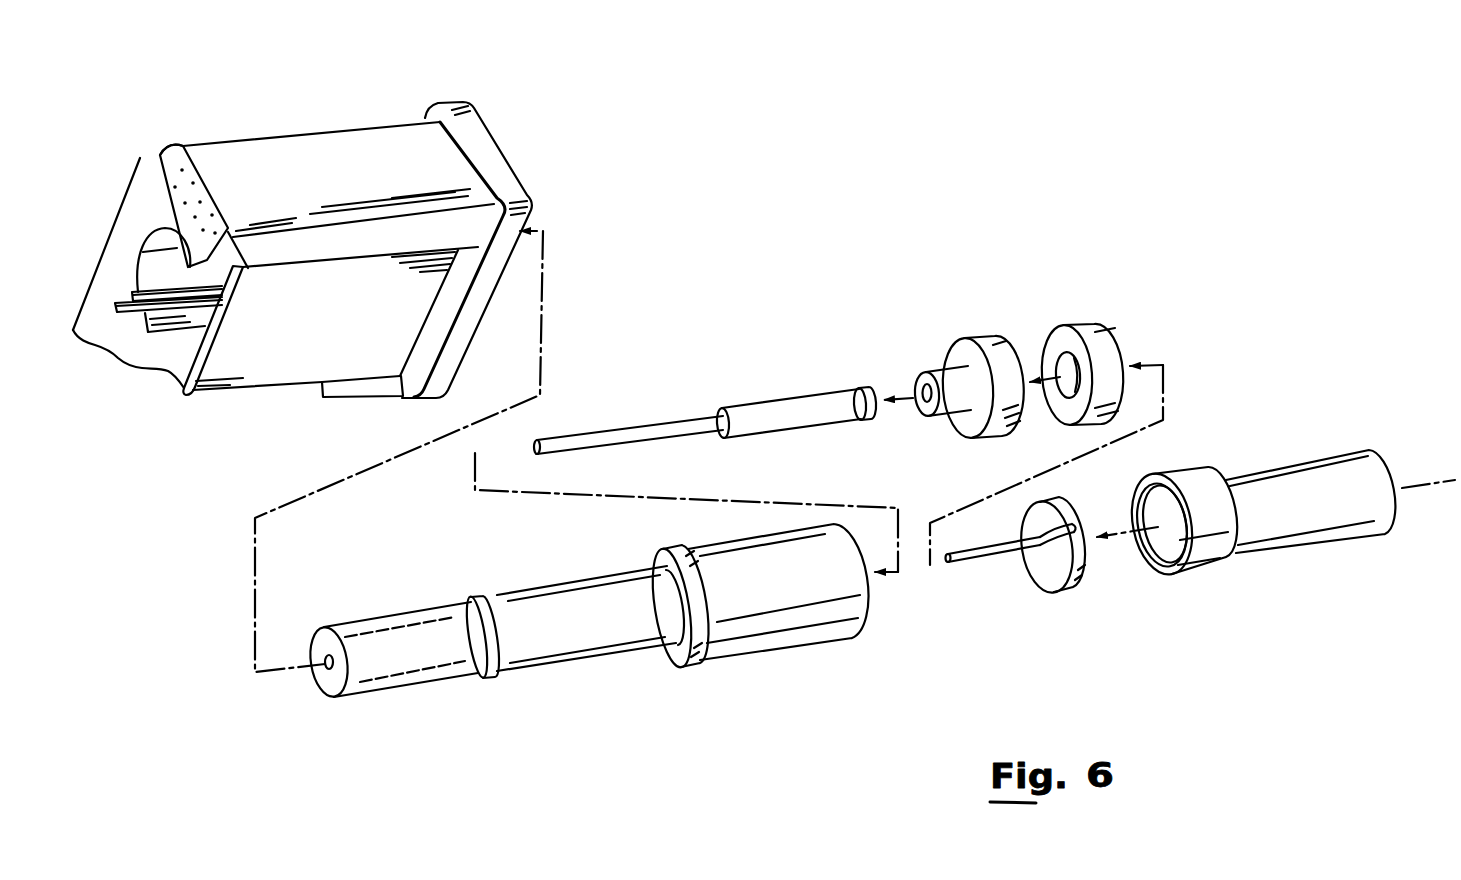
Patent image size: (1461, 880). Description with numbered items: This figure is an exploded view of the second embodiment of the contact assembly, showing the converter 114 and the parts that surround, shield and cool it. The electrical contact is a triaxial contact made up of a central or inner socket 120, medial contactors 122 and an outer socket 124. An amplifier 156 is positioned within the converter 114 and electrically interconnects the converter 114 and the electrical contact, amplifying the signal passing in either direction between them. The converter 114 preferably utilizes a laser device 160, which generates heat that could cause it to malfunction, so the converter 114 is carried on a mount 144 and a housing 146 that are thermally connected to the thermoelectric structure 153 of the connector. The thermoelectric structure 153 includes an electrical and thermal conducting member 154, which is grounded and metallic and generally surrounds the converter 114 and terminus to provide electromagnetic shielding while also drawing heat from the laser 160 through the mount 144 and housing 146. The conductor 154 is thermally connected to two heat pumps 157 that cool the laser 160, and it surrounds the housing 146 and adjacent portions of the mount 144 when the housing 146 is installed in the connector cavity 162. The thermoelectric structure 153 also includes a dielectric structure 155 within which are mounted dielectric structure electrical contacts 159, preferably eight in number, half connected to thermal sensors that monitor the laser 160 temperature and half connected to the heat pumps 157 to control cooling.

The converter 114 is at (1087, 592).
The central or inner socket 120 is at (681, 418).
The medial contactors 122 is at (800, 400).
The outer socket 124 is at (317, 636).
The mount 144 is at (1200, 470).
The housing 146 is at (777, 648).
The thermoelectric structure 153 is at (301, 242).
The electrical and thermal conducting member 154 is at (128, 284).
The dielectric structure 155 is at (170, 162).
The amplifier 156 is at (1085, 323).
The heat pumps 157 is at (172, 338).
The dielectric structure electrical contacts 159 is at (198, 176).
The laser device 160 is at (1038, 562).
The connector cavity 162 is at (170, 242).